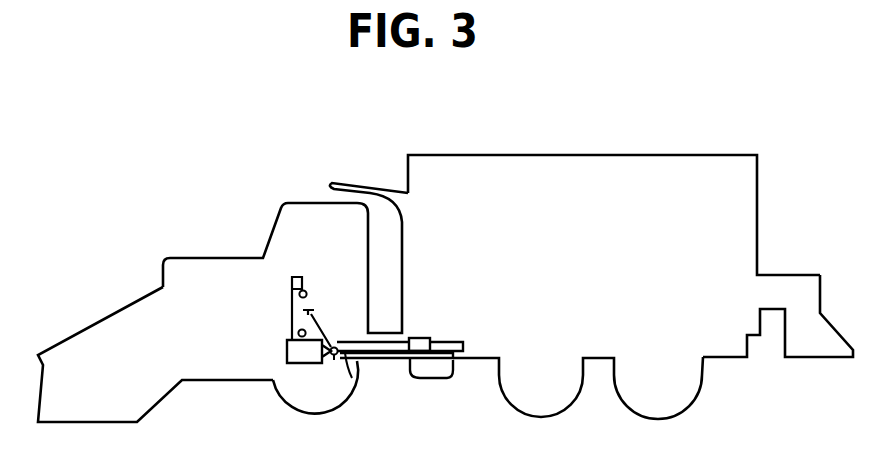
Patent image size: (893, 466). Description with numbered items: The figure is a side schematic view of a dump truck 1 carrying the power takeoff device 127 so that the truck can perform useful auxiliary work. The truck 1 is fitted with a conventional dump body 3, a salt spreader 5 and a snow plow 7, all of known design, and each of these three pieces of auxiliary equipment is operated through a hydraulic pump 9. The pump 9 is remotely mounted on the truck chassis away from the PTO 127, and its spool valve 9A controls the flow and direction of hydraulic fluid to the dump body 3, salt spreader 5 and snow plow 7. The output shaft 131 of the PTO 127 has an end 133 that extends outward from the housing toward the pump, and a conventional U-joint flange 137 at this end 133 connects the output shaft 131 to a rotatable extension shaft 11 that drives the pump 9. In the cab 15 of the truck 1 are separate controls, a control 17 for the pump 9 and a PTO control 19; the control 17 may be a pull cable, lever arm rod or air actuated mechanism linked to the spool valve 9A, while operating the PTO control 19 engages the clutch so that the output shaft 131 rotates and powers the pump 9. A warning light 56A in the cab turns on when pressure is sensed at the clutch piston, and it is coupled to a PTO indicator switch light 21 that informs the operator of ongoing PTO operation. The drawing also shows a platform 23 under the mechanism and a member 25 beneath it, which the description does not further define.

The dump truck 1 is at (540, 131).
The dump body 3 is at (577, 233).
The salt spreader 5 is at (790, 290).
The snow plow 7 is at (72, 335).
The hydraulic pump 9 is at (453, 348).
The spool valve 9A is at (428, 338).
The extension shaft 11 is at (377, 359).
The cab 15 is at (293, 207).
The control for pump 17 is at (321, 305).
The PTO control 19 is at (300, 277).
The PTO indicator switch light 21 is at (298, 292).
The platform 23 is at (480, 361).
The wheel arc member 25 is at (360, 398).
The warning light 56A is at (298, 333).
The power takeoff device 127 is at (287, 352).
The output shaft 131 is at (300, 380).
The end of output shaft 133 is at (336, 347).
The U-joint flange 137 is at (335, 356).